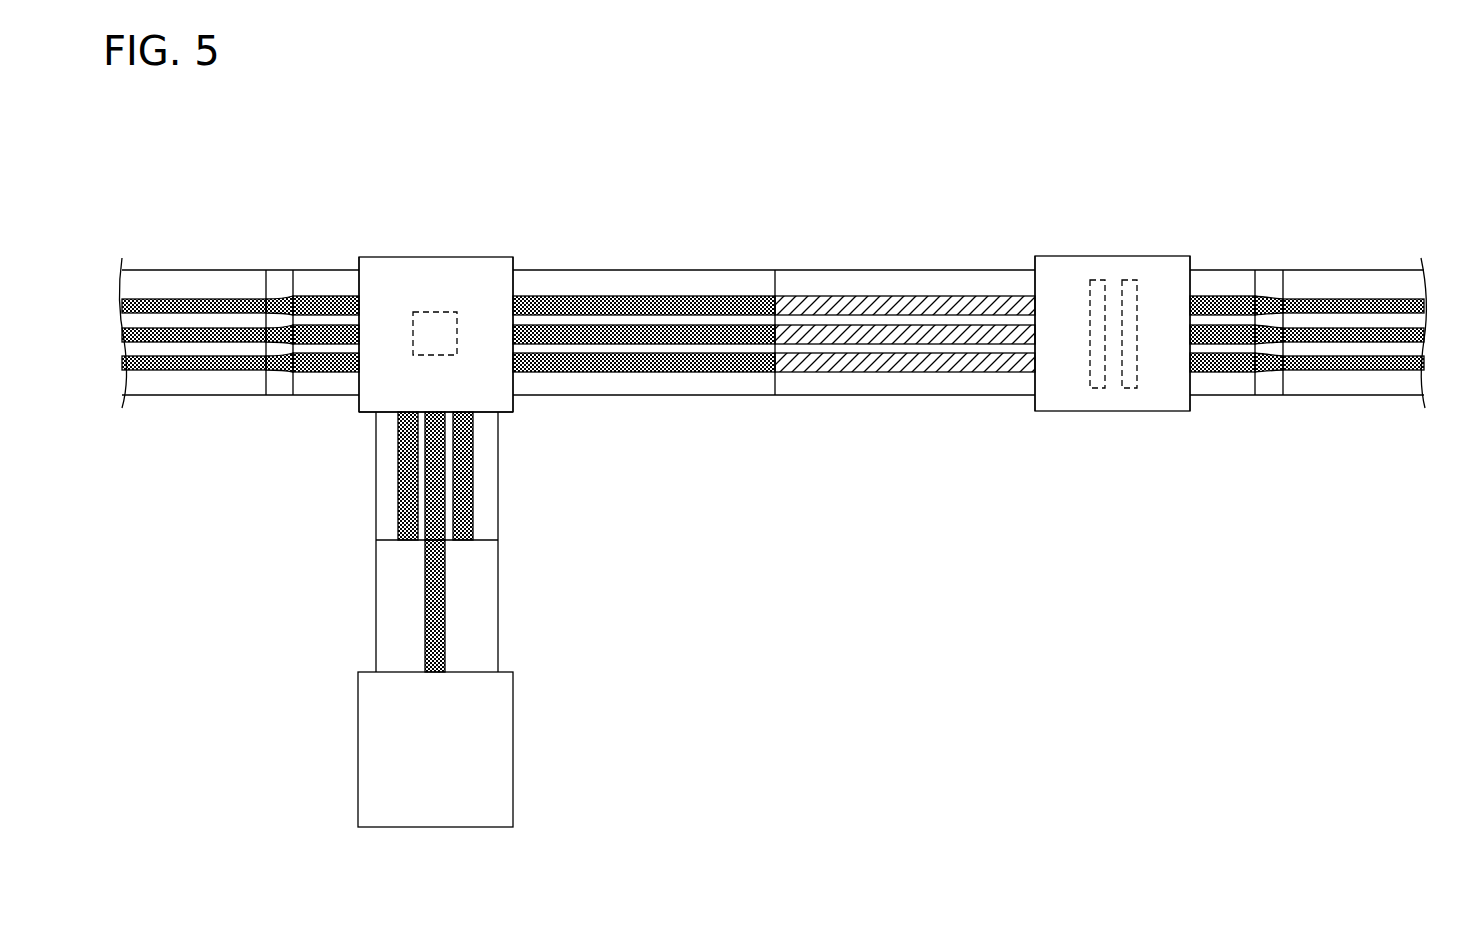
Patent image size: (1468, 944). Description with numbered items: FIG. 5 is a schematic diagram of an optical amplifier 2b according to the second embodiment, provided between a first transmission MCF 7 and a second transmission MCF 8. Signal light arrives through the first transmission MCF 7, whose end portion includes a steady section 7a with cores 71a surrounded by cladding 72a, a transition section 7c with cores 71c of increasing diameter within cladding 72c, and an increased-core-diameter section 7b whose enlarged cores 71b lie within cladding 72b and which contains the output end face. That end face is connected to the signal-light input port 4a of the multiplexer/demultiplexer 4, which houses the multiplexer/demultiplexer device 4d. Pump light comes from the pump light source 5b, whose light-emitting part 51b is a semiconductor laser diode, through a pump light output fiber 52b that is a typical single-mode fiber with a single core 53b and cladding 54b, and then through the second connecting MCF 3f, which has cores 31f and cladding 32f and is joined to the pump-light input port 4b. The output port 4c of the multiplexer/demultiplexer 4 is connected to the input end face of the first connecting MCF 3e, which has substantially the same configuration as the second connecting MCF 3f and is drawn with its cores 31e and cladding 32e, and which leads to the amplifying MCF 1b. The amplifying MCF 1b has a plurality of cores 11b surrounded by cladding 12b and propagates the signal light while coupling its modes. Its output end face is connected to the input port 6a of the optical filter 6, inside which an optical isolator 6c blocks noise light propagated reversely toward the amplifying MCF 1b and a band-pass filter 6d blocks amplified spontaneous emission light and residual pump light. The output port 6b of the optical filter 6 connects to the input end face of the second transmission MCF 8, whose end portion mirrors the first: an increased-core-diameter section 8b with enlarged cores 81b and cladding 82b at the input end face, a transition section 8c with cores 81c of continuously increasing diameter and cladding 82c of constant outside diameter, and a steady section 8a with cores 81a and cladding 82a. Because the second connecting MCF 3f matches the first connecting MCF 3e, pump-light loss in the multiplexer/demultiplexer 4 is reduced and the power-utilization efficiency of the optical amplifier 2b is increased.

The first transmission MCF 7 is at (358, 193).
The steady section 7a is at (120, 244).
The increased-core-diameter section 7b is at (358, 244).
The transition section 7c is at (265, 244).
The cores 71a is at (204, 372).
The cores 71b is at (343, 372).
The cores 71c is at (285, 372).
The cladding 72a is at (154, 396).
The cladding 72b is at (317, 396).
The cladding 72c is at (267, 396).
The multiplexer/demultiplexer 4 is at (473, 256).
The signal-light input port 4a is at (359, 360).
The pump-light input port 4b is at (463, 410).
The output port 4c is at (513, 307).
The multiplexer/demultiplexer device 4d is at (425, 310).
The first connecting MCF 3e is at (514, 246).
The conductor of second cable portion 31e is at (590, 372).
The insulator of second cable portion 32e is at (678, 395).
The amplifying MCF 1b is at (775, 246).
The cores 11b is at (805, 372).
The cladding 12b is at (890, 395).
The optical filter 6 is at (1150, 255).
The input port 6a is at (1035, 363).
The output port 6b is at (1190, 363).
The optical isolator 6c is at (1093, 279).
The band-pass filter 6d is at (1128, 279).
The second transmission MCF 8 is at (1190, 194).
The steady section 8a is at (1428, 244).
The increased-core-diameter section 8b is at (1190, 244).
The transition section 8c is at (1283, 244).
The cores 81a is at (1353, 373).
The cores 81b is at (1202, 373).
The cores 81c is at (1265, 373).
The cladding 82a is at (1398, 396).
The cladding 82b is at (1230, 396).
The cladding 82c is at (1280, 396).
The second connecting MCF 3f is at (524, 412).
The cores 31f is at (398, 538).
The cladding 32f is at (376, 500).
The pump light source 5b is at (592, 592).
The light-emitting part 51b is at (524, 672).
The pump light output fiber 52b is at (524, 540).
The single core 53b is at (425, 595).
The cladding 54b is at (376, 648).
The optical amplifier 2b is at (287, 849).